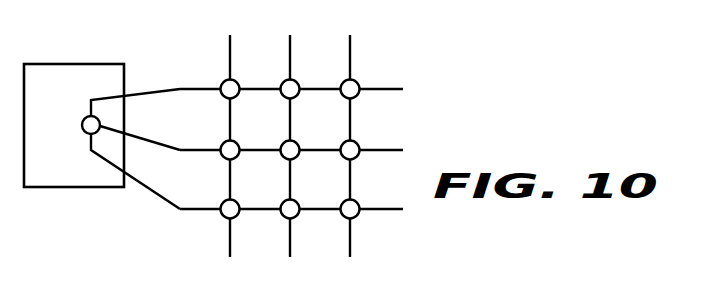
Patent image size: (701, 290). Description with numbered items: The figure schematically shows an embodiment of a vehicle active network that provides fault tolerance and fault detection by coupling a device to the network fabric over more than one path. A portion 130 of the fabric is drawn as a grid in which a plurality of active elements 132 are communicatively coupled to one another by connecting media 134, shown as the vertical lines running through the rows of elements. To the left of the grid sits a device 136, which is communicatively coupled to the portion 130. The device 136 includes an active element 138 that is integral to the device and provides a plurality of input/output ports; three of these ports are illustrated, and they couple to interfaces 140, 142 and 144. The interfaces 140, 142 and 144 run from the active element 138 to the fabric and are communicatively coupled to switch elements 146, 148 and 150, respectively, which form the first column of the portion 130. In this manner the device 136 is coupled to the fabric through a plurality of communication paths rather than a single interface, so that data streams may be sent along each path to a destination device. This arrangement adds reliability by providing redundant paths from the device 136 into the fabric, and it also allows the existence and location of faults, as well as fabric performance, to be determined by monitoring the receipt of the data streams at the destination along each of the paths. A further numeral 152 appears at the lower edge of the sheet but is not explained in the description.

The portion of a fabric 130 is at (435, 128).
The active elements 132 is at (297, 97).
The connecting media 134 is at (352, 118).
The device 136 is at (76, 63).
The active element 138 is at (81, 125).
The interface 140 is at (148, 92).
The interface 142 is at (148, 140).
The interface 144 is at (158, 196).
The switch element 146 is at (223, 96).
The switch element 148 is at (223, 157).
The switch element 150 is at (223, 216).
The signal line 152 is at (24, 284).